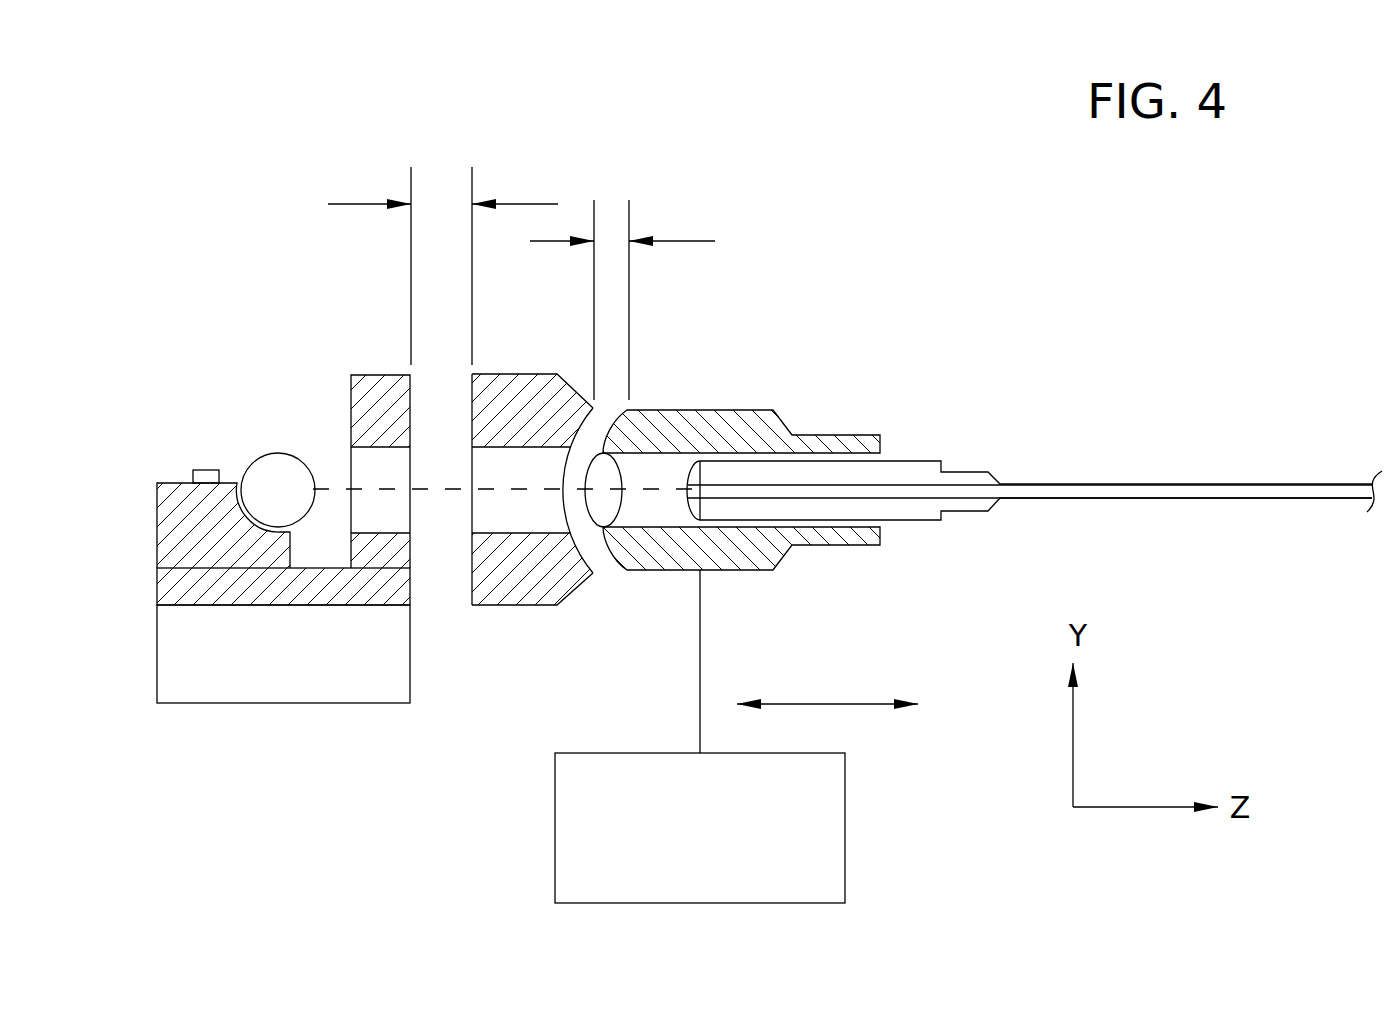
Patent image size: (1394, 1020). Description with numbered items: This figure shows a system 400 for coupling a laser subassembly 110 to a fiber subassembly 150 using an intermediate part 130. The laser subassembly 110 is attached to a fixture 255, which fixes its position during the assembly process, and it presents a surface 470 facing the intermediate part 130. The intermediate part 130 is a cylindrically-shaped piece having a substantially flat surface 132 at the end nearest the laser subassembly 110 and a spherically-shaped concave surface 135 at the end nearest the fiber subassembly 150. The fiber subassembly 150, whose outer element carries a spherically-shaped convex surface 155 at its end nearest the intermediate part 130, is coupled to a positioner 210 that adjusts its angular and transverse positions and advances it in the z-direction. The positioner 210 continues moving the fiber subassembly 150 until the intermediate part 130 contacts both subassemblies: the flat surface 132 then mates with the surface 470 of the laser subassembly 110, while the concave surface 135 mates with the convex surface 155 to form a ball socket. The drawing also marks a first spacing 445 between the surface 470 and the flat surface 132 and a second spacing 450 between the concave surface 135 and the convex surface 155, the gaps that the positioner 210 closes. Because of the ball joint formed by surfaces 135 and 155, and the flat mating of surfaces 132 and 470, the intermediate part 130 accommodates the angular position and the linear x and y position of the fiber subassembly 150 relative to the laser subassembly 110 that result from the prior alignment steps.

The laser subassembly 110 is at (166, 353).
The intermediate part 130 is at (517, 605).
The substantially flat surface 132 is at (471, 597).
The spherically-shaped concave surface 135 is at (576, 589).
The fiber subassembly 150 is at (800, 405).
The spherically-shaped convex surface 155 is at (619, 560).
The positioner 210 is at (845, 808).
The fixture 255 is at (212, 705).
The alignment system 400 is at (805, 162).
The first gap distance 445 is at (445, 204).
The second gap distance 450 is at (610, 241).
The surface of laser subassembly 470 is at (412, 380).